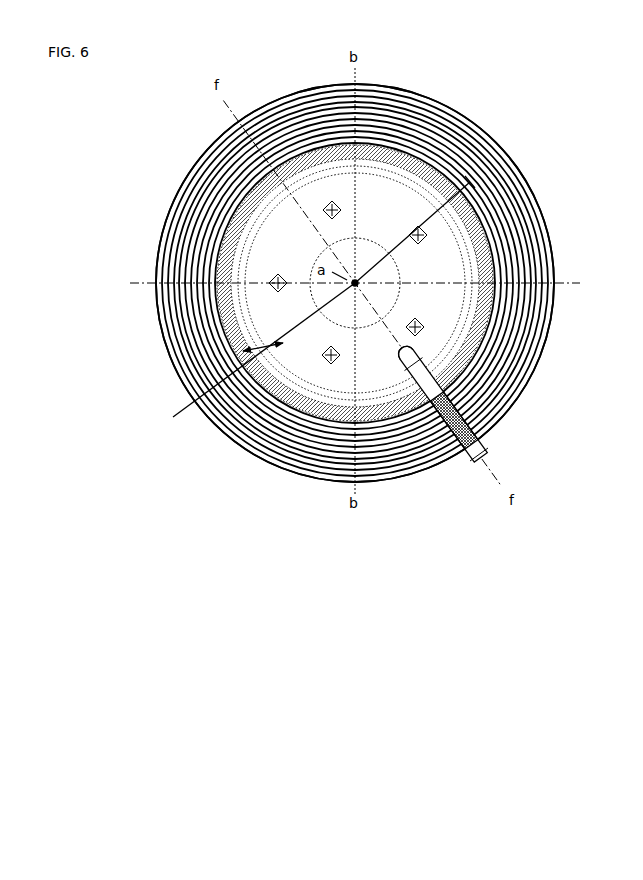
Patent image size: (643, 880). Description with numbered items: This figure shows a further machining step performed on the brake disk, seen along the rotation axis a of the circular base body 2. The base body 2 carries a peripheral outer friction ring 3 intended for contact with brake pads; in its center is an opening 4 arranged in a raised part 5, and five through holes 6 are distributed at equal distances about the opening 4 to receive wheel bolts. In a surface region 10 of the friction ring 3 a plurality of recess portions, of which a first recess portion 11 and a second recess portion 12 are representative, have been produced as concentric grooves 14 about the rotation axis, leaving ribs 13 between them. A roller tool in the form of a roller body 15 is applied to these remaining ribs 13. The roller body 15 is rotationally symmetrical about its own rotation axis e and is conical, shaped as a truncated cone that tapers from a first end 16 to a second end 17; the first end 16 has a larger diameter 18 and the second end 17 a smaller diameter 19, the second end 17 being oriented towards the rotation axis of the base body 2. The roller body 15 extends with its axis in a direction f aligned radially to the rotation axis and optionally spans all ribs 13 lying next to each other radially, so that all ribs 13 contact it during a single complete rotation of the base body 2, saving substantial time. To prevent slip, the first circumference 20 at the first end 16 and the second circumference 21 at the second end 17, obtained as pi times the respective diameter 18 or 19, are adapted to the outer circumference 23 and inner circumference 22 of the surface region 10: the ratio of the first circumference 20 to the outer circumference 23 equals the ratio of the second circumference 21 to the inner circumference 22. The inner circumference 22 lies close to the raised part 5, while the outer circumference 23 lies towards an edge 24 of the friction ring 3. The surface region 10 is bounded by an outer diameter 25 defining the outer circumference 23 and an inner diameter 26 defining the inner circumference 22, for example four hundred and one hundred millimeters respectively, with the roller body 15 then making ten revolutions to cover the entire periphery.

The base body 2 is at (150, 185).
The friction ring 3 is at (497, 200).
The opening 4 is at (327, 260).
The raised part 5 is at (255, 358).
The through holes 6 is at (307, 140).
The surface region 10 is at (195, 352).
The first recess portion 11 is at (522, 337).
The second recess portion 12 is at (550, 303).
The rib 13 is at (523, 373).
The concentric grooves 14 is at (533, 197).
The roller body 15 is at (450, 465).
The first end 16 is at (480, 428).
The second end 17 is at (355, 283).
The larger diameter 18 is at (500, 458).
The smaller diameter 19 is at (398, 350).
The first circumference 20 is at (480, 428).
The second circumference 21 is at (437, 347).
The inner circumference 22 is at (312, 415).
The outer circumference 23 is at (267, 452).
The edge 24 is at (315, 477).
The outer diameter 25 is at (279, 334).
The inner diameter 26 is at (421, 235).